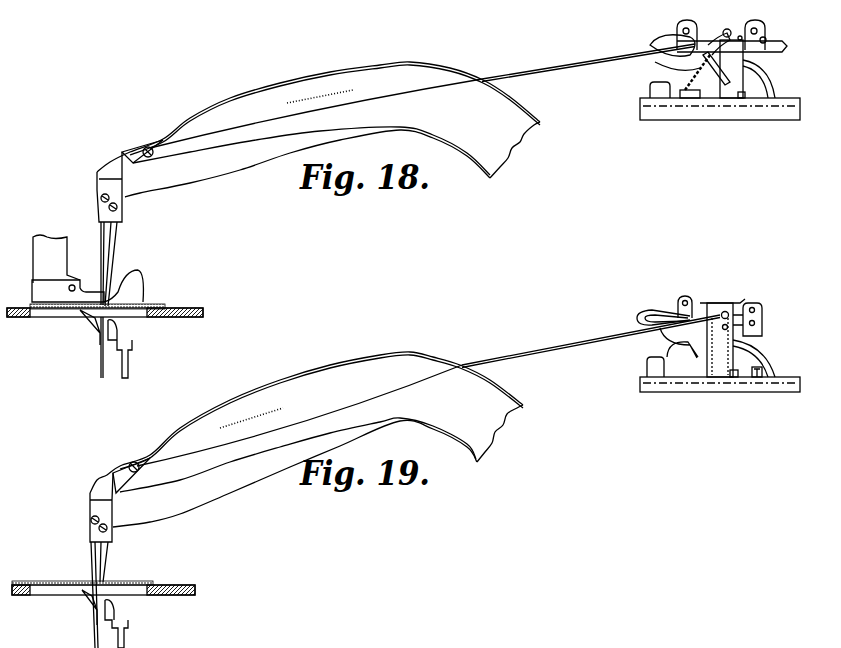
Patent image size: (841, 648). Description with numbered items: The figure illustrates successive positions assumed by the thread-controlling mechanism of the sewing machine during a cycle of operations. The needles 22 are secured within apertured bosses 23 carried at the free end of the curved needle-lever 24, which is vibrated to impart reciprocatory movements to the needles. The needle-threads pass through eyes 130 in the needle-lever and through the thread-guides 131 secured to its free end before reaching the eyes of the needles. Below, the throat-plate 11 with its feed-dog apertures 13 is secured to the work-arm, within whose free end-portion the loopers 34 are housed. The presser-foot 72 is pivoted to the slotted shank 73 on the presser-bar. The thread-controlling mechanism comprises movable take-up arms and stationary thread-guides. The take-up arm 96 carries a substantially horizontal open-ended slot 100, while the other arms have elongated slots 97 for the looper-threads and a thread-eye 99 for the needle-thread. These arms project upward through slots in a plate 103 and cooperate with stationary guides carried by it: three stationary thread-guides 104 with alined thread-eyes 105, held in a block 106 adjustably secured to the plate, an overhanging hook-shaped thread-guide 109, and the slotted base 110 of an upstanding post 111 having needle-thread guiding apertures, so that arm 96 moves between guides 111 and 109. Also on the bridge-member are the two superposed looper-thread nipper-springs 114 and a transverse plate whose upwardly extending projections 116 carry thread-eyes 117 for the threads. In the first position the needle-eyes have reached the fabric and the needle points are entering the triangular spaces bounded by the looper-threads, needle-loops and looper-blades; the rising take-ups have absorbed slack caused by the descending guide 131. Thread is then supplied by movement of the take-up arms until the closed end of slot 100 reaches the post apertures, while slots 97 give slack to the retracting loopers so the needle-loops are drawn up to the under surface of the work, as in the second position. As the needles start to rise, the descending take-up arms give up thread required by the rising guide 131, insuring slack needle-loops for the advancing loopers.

In FIG. 18, the throat-plate 11 is at (182, 307).
In FIG. 19, the throat-plate 11 is at (165, 586).
In FIG. 18, the feed-dog apertures 13 is at (48, 314).
In FIG. 19, the feed-dog apertures 13 is at (47, 590).
In FIG. 18, the needles 22 is at (102, 246).
In FIG. 19, the needles 22 is at (97, 572).
In FIG. 18, the apertured bosses 23 is at (108, 217).
In FIG. 19, the apertured bosses 23 is at (85, 497).
In FIG. 18, the curved needle-lever 24 is at (397, 72).
In FIG. 19, the curved needle-lever 24 is at (384, 371).
In FIG. 18, the loopers 34 is at (97, 356).
In FIG. 19, the loopers 34 is at (97, 638).
In FIG. 18, the presser-foot 72 is at (40, 297).
In FIG. 18, the slotted shank 73 is at (47, 258).
In FIG. 18, the take-up arm 96 is at (752, 66).
In FIG. 18, the elongated slots 97 is at (715, 43).
In FIG. 19, the elongated slots 97 is at (646, 310).
In FIG. 18, the thread-eye 99 is at (727, 29).
In FIG. 19, the thread-eye 99 is at (722, 312).
In FIG. 18, the open-ended slot 100 is at (783, 46).
In FIG. 18, the plate 103 is at (780, 100).
In FIG. 19, the plate 103 is at (780, 381).
In FIG. 18, the stationary thread-guides 104 is at (653, 68).
In FIG. 18, the thread-eyes 105 is at (690, 90).
In FIG. 18, the block 106 is at (652, 88).
In FIG. 19, the block 106 is at (650, 370).
In FIG. 18, the hook-shaped thread-guide 109 is at (707, 86).
In FIG. 19, the hook-shaped thread-guide 109 is at (755, 357).
In FIG. 18, the slotted base 110 is at (712, 99).
In FIG. 19, the slotted base 110 is at (712, 378).
In FIG. 18, the upstanding post 111 is at (743, 99).
In FIG. 19, the upstanding post 111 is at (733, 378).
In FIG. 18, the looper-thread nipper-springs 114 is at (742, 40).
In FIG. 18, the upwardly extending projections 116 is at (680, 23).
In FIG. 19, the upwardly extending projections 116 is at (683, 301).
In FIG. 18, the thread-eyes 117 is at (683, 31).
In FIG. 19, the thread-eyes 117 is at (763, 313).
In FIG. 18, the eyes 130 is at (484, 83).
In FIG. 19, the eyes 130 is at (461, 371).
In FIG. 18, the thread-guides 131 is at (147, 146).
In FIG. 19, the thread-guides 131 is at (133, 461).